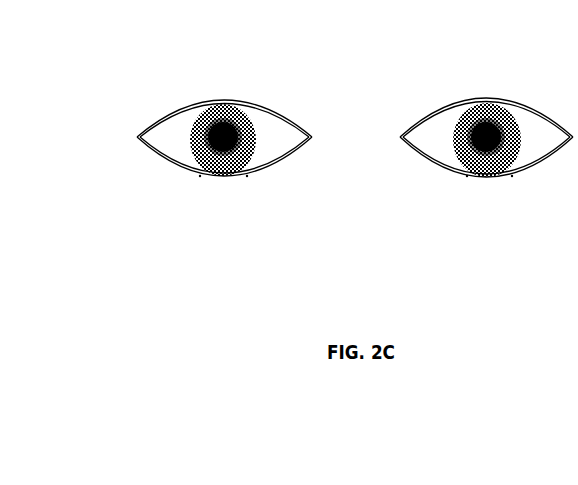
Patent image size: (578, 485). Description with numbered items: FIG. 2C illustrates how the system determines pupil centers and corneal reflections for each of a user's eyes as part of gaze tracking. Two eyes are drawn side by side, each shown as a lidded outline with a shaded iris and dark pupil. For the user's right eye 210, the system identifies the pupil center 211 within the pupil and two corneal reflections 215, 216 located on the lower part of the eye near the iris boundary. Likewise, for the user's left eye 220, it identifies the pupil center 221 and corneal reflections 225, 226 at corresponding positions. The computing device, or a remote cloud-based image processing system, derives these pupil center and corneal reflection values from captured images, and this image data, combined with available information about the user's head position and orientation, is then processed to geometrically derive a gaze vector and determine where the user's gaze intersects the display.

The right eye 210 is at (277, 80).
The pupil center 211 is at (194, 154).
The corneal reflection 215 is at (200, 177).
The corneal reflection 216 is at (248, 177).
The left eye 220 is at (425, 80).
The pupil center 221 is at (456, 155).
The corneal reflection 225 is at (467, 177).
The corneal reflection 226 is at (512, 177).